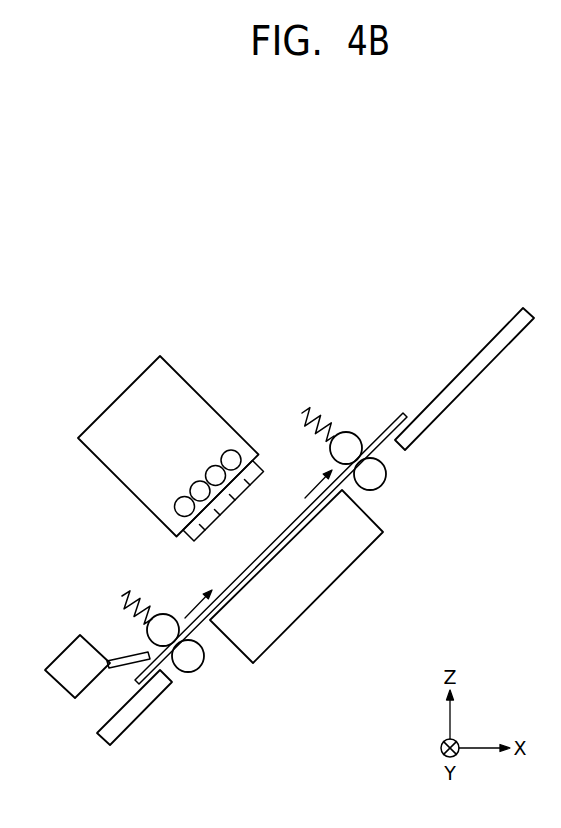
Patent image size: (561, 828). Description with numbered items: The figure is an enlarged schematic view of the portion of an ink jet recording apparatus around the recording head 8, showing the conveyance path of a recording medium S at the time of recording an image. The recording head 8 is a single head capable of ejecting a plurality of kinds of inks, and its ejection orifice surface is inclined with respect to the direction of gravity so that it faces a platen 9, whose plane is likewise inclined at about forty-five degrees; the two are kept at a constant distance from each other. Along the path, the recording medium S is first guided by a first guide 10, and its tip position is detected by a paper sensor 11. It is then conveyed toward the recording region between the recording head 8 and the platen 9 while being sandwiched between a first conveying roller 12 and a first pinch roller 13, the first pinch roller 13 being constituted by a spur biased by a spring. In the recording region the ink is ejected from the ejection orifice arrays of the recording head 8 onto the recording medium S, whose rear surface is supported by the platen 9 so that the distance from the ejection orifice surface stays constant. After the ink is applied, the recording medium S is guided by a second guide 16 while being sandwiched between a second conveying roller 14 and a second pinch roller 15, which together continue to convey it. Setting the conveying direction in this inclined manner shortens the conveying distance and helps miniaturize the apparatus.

The recording head 8 is at (130, 403).
The platen 9 is at (307, 587).
The first guide 10 is at (132, 710).
The paper sensor 11 is at (75, 657).
The first conveying roller 12 is at (197, 662).
The first pinch roller 13 is at (128, 593).
The second conveying roller 14 is at (377, 478).
The second pinch roller 15 is at (312, 410).
The second guide 16 is at (453, 388).
The recording medium S is at (398, 415).